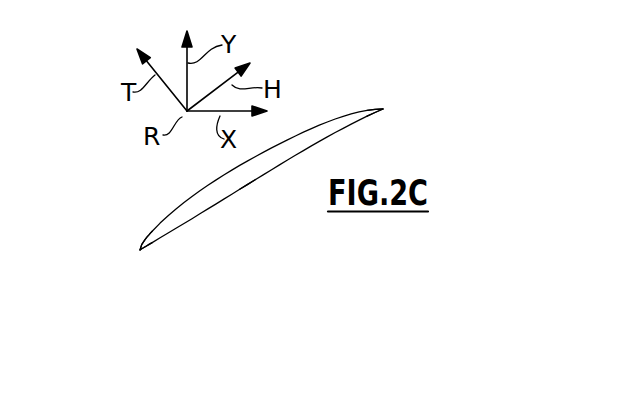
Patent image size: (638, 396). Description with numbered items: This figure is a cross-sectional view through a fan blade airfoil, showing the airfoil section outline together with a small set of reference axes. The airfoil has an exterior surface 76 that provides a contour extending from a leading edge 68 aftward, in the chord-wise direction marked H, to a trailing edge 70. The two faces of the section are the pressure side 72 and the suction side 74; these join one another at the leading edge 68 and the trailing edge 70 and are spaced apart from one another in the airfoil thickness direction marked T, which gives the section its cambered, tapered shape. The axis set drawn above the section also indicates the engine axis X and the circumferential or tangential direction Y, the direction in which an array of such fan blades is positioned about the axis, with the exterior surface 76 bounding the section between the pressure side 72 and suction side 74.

The leading edge 68 is at (141, 250).
The trailing edge 70 is at (383, 109).
The pressure side 72 is at (213, 208).
The suction side 74 is at (216, 182).
The exterior surface 76 is at (257, 197).